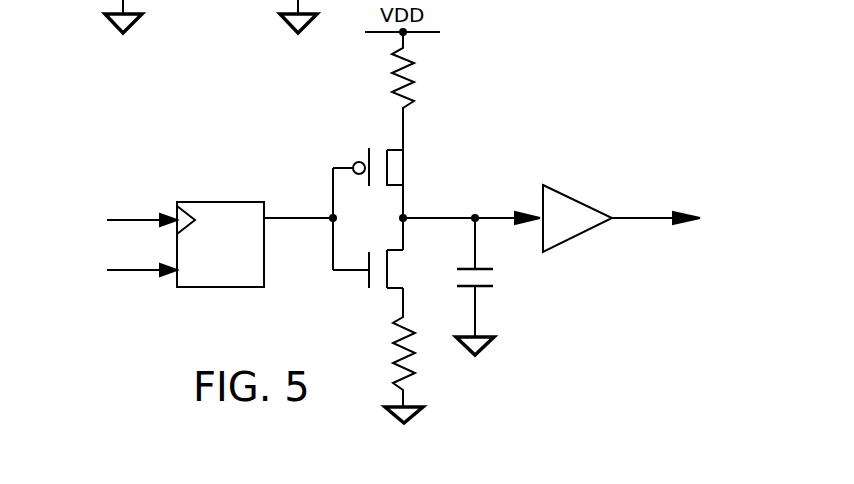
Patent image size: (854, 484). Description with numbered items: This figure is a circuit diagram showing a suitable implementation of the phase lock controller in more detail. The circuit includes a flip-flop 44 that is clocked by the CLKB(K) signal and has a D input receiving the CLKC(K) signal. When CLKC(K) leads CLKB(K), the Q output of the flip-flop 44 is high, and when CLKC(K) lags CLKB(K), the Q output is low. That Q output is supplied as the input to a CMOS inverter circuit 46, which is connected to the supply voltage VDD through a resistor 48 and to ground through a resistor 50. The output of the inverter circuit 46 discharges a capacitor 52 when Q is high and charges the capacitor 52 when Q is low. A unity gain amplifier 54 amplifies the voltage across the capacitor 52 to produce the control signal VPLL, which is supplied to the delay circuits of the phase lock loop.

The flip-flop 44 is at (190, 288).
The CMOS inverter circuit 46 is at (424, 218).
The resistor 48 is at (405, 76).
The resistor 50 is at (400, 340).
The capacitor 52 is at (491, 279).
The unity gain amplifier 54 is at (607, 218).